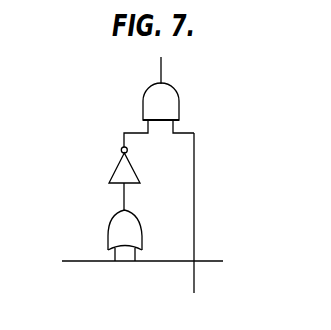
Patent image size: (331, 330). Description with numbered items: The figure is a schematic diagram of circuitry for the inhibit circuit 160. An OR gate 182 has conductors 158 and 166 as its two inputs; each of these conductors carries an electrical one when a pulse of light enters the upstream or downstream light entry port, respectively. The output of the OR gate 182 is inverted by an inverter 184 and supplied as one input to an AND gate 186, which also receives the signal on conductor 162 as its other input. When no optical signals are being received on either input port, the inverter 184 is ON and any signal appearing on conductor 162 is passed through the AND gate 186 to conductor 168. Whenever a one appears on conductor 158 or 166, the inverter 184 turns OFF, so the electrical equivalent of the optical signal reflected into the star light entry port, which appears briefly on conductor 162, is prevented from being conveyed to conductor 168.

The inhibit circuit 160 is at (82, 97).
The conductor 168 is at (161, 72).
The AND gate 186 is at (179, 107).
The inverter 184 is at (108, 178).
The OR gate 182 is at (114, 222).
The conductor 158 is at (82, 261).
The conductor 166 is at (213, 260).
The conductor 162 is at (196, 273).